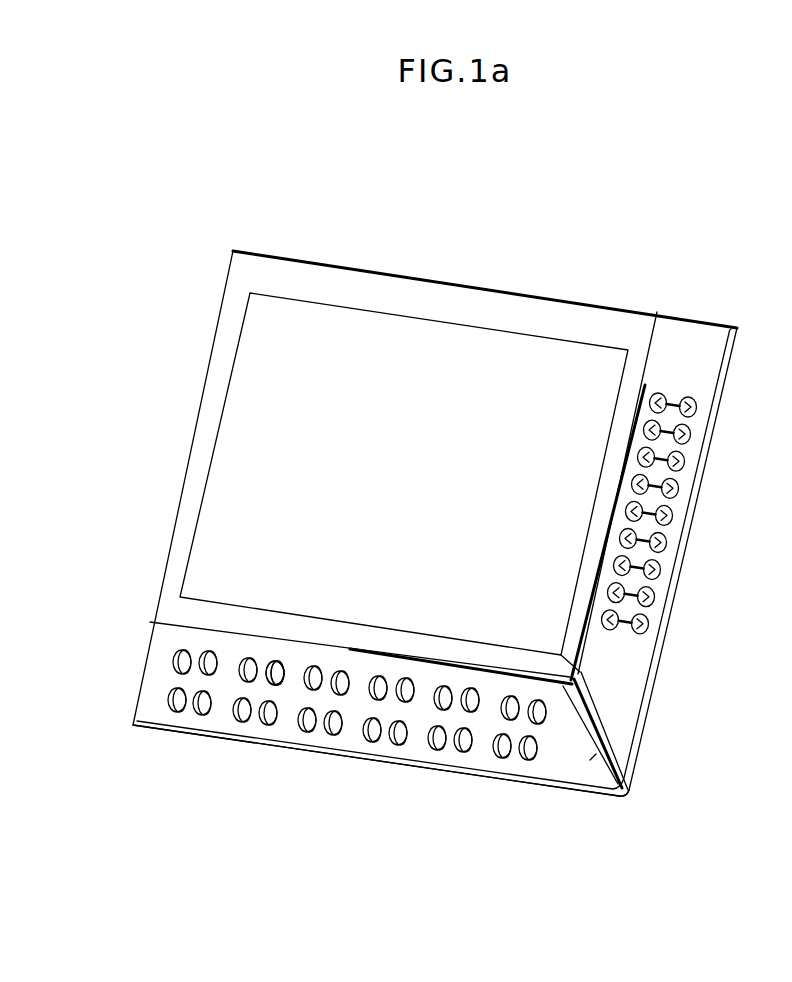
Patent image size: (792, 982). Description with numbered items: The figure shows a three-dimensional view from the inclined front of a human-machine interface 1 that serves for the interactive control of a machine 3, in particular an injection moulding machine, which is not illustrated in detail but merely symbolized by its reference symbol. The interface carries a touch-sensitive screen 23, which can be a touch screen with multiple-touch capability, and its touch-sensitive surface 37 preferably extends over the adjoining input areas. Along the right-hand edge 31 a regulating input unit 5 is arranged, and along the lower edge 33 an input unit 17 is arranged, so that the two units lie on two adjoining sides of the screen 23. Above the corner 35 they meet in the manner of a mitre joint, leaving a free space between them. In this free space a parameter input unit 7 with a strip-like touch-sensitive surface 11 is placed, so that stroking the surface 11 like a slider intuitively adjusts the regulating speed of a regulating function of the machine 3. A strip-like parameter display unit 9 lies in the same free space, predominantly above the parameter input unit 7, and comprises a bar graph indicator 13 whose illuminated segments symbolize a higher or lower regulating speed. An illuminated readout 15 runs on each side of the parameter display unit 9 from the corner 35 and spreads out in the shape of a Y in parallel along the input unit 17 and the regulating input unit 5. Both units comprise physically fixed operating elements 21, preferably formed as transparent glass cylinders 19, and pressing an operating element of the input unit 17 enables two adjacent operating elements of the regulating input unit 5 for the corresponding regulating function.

The human-machine interface 1 is at (528, 247).
The machine 3 is at (438, 420).
The regulating input unit 5 is at (683, 361).
The parameter input unit 7 is at (561, 655).
The parameter display unit 9 is at (592, 700).
The surface 11 is at (617, 773).
The bar graph indicator 13 is at (590, 760).
The illuminated readout 15 is at (597, 587).
The input unit 17 is at (355, 698).
The glass cylinders 19 is at (263, 713).
The operating elements 21 is at (201, 708).
The touch-sensitive screen 23 is at (404, 428).
The right-hand edge 31 is at (705, 538).
The lower edge 33 is at (432, 772).
The corner 35 is at (630, 800).
The touch-sensitive surface 37 is at (422, 347).